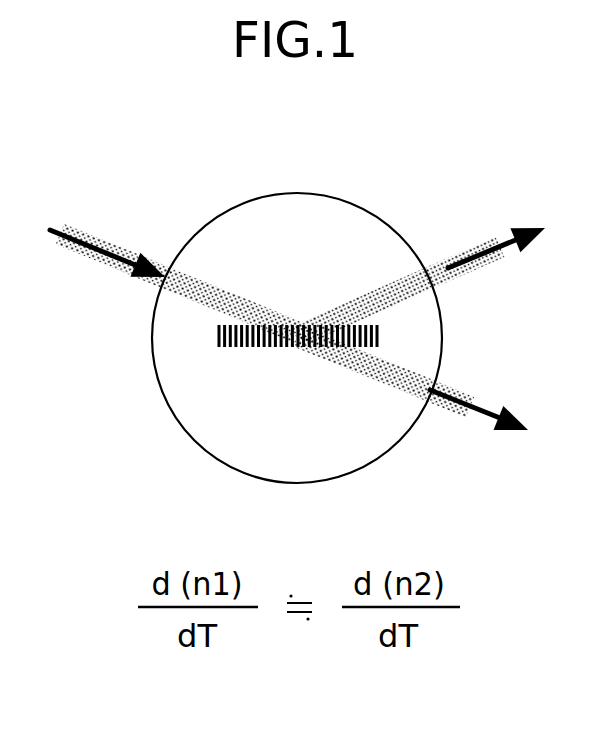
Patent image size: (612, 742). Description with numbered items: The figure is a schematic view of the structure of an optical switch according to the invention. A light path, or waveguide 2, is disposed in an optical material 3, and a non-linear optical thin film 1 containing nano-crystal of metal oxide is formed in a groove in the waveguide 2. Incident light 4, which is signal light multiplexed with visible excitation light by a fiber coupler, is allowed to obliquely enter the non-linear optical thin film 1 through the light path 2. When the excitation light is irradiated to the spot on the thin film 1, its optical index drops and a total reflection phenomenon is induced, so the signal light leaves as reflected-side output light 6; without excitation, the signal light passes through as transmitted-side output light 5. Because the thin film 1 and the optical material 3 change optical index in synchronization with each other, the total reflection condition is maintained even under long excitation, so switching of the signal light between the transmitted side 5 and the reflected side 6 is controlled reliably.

The non-linear optical thin film 1 is at (228, 333).
The light path (waveguide) 2 is at (404, 283).
The optical material 3 is at (300, 208).
The incident light 4 is at (103, 250).
The transmitted-side output light 5 is at (457, 405).
The reflected-side output light 6 is at (466, 262).